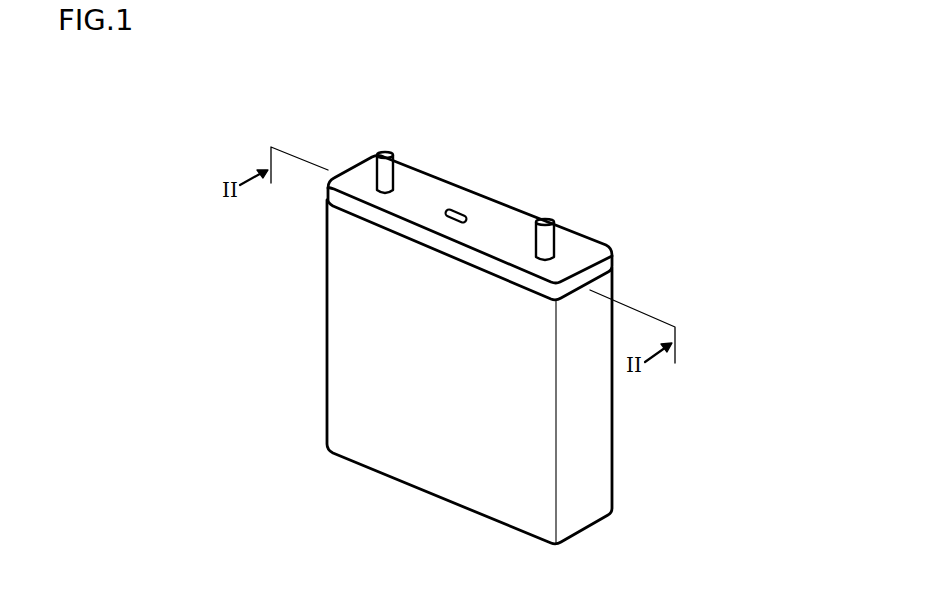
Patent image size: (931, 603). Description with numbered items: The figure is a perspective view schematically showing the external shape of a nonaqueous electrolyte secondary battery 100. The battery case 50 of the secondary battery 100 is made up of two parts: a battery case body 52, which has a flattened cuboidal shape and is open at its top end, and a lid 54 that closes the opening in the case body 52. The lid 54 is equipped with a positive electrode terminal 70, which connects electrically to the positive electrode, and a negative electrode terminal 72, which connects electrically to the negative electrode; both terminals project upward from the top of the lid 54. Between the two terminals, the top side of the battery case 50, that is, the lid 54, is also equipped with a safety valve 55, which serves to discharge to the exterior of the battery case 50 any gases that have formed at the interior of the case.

The nonaqueous electrolyte secondary battery 100 is at (738, 112).
The battery case 50 is at (442, 463).
The battery case body 52 is at (602, 478).
The lid 54 is at (608, 263).
The safety valve 55 is at (453, 210).
The positive electrode terminal 70 is at (383, 157).
The negative electrode terminal 72 is at (545, 220).